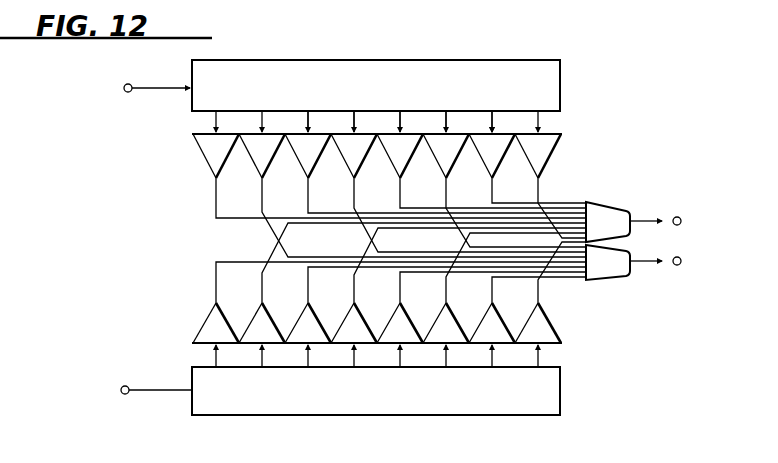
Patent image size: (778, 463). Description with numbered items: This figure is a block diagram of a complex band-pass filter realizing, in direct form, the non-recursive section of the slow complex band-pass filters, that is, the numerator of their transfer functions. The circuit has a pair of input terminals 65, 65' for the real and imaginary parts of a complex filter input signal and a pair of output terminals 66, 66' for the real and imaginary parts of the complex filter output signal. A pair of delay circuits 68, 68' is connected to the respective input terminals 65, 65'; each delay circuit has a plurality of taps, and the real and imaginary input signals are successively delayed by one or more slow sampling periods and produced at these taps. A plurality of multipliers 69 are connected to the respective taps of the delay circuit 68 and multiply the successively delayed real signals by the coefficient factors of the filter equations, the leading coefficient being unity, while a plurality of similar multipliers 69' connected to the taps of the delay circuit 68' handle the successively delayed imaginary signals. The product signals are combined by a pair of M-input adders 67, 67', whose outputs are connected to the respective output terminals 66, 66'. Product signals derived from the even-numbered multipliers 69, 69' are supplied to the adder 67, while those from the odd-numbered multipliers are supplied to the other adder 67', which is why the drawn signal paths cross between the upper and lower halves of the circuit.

The input terminal 65 is at (136, 91).
The input terminal 65' is at (131, 394).
The output terminal 66 is at (674, 220).
The output terminal 66' is at (676, 262).
The M-input adder 67 is at (623, 212).
The M-input adder 67' is at (620, 280).
The delay circuit 68 is at (398, 96).
The delay circuit 68' is at (376, 398).
The multipliers 69 is at (383, 195).
The multipliers 69' is at (384, 288).